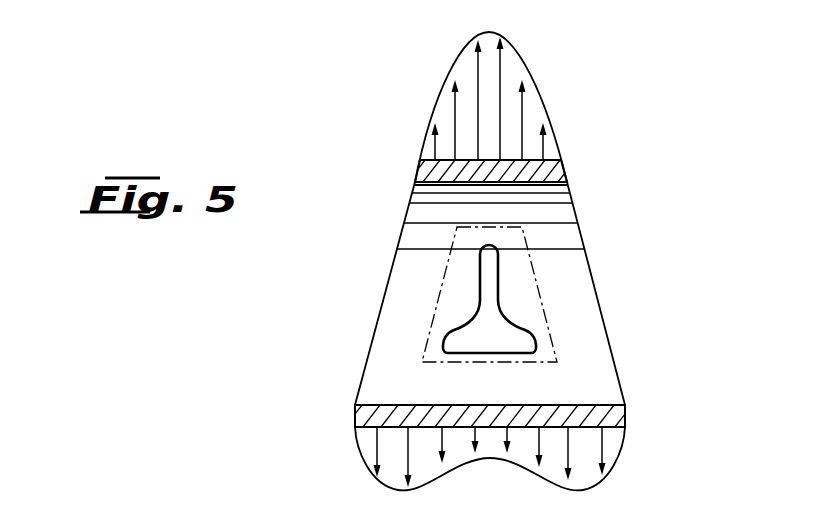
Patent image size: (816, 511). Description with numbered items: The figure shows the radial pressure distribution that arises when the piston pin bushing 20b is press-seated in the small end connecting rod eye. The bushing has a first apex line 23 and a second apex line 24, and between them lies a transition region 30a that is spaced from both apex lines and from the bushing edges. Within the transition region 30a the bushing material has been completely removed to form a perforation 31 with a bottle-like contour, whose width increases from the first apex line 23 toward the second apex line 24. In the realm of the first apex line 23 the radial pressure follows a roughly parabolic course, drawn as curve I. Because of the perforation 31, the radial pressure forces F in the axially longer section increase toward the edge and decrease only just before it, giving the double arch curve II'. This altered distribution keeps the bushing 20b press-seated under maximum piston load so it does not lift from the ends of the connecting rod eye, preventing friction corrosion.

The piston pin bushing 20b is at (580, 165).
The first apex line 23 is at (550, 188).
The second apex line 24 is at (600, 405).
The transition region 30a is at (527, 285).
The perforation 31 is at (517, 337).
The radial pressure forces F is at (455, 108).
The pressure distribution curve I is at (537, 100).
The double arch pressure distribution curve II' is at (661, 472).